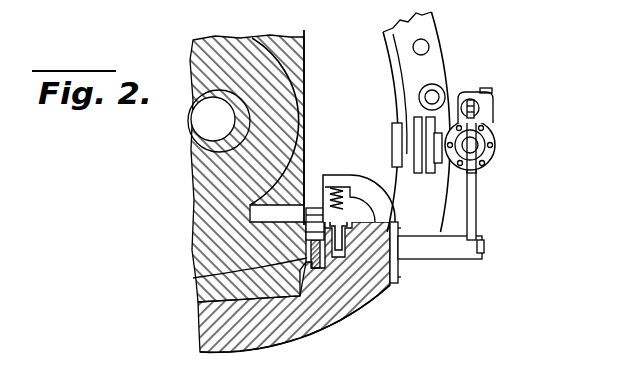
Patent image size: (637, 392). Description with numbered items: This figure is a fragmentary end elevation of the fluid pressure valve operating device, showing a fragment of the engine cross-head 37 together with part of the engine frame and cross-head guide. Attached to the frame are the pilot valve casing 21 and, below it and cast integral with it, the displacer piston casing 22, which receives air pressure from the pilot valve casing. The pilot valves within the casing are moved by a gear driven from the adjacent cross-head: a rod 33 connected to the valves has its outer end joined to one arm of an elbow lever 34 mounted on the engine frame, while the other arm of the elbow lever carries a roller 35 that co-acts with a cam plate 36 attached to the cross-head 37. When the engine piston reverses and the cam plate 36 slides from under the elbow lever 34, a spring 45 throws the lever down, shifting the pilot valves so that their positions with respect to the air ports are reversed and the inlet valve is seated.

The pilot valve casing 21 is at (468, 98).
The displacer piston casing 22 is at (496, 152).
The rod 33 is at (477, 107).
The elbow lever 34 is at (478, 226).
The roller 35 is at (316, 208).
The cam plate 36 is at (315, 272).
The cross-head 37 is at (303, 118).
The spring 45 is at (341, 204).